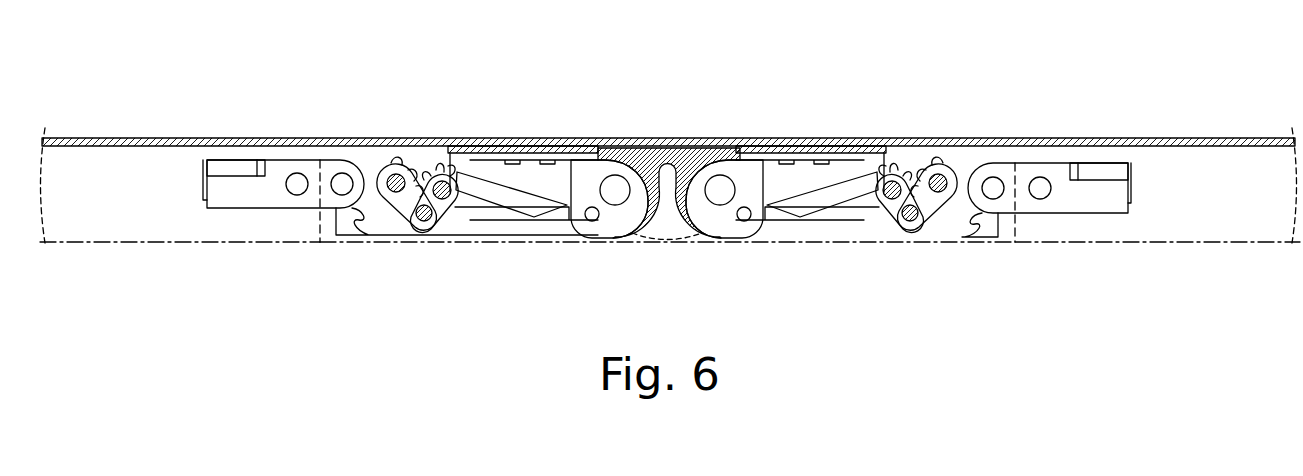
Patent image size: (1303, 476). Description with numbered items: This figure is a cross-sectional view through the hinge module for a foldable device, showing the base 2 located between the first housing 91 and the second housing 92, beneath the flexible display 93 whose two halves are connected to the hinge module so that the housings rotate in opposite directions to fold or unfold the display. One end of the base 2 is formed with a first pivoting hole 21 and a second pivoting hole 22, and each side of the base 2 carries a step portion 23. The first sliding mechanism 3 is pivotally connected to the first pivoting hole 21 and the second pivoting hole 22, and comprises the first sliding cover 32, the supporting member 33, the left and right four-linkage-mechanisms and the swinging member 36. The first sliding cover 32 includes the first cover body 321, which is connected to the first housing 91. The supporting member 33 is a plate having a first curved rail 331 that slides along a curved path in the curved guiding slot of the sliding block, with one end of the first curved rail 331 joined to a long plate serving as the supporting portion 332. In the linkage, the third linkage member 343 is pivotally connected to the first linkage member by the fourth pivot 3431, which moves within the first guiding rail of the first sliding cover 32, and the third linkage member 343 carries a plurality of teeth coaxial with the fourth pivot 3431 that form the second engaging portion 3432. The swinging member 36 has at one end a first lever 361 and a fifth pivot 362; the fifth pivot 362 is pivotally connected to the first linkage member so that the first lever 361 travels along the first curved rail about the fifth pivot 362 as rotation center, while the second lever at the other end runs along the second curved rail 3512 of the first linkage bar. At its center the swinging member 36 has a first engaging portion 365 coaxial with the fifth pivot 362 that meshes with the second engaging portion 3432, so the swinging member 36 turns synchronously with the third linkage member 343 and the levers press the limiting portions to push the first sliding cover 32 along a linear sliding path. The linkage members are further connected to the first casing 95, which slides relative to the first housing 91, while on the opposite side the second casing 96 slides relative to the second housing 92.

The base 2 is at (640, 247).
The first pivoting hole 21 is at (716, 193).
The second pivoting hole 22 is at (745, 215).
The step portion 23 is at (748, 146).
The first sliding mechanism 3 is at (987, 82).
The first sliding cover 32 is at (1073, 143).
The first cover body 321 is at (1112, 162).
The supporting member 33 is at (811, 180).
The first curved rail 331 is at (873, 147).
The supporting portion 332 is at (813, 147).
The third linkage member 343 is at (892, 222).
The fourth pivot 3431 is at (893, 198).
The second engaging portion 3432 is at (899, 160).
The swinging member 36 is at (986, 150).
The first lever 361 is at (916, 222).
The fifth pivot 362 is at (930, 215).
The first engaging portion 365 is at (946, 150).
The second curved rail 3512 is at (963, 232).
The first housing 91 is at (1188, 232).
The second housing 92 is at (198, 230).
The flexible display 93 is at (533, 141).
The first casing 95 is at (905, 250).
The second casing 96 is at (410, 250).